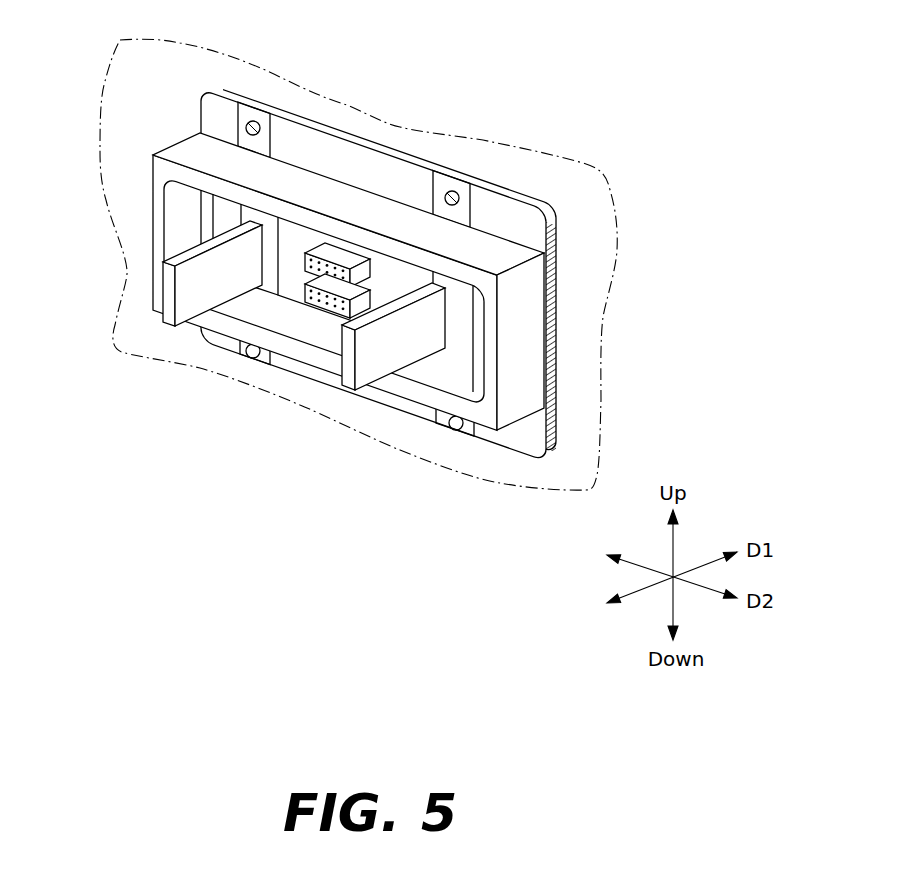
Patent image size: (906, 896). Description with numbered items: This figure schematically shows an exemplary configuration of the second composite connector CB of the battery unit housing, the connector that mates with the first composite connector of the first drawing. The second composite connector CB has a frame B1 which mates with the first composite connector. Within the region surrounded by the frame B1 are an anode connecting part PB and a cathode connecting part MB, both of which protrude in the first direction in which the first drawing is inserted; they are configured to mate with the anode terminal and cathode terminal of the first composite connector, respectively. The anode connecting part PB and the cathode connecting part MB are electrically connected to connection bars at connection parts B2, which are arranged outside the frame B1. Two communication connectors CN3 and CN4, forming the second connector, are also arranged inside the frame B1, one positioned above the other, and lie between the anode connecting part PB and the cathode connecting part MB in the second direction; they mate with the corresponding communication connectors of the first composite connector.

The second composite connector CB is at (399, 284).
The frame B1 is at (500, 258).
The connection parts B2 is at (243, 110).
The communication connector CN3 is at (308, 250).
The communication connector CN4 is at (308, 295).
The anode connecting part PB is at (187, 283).
The cathode connecting part MB is at (365, 378).